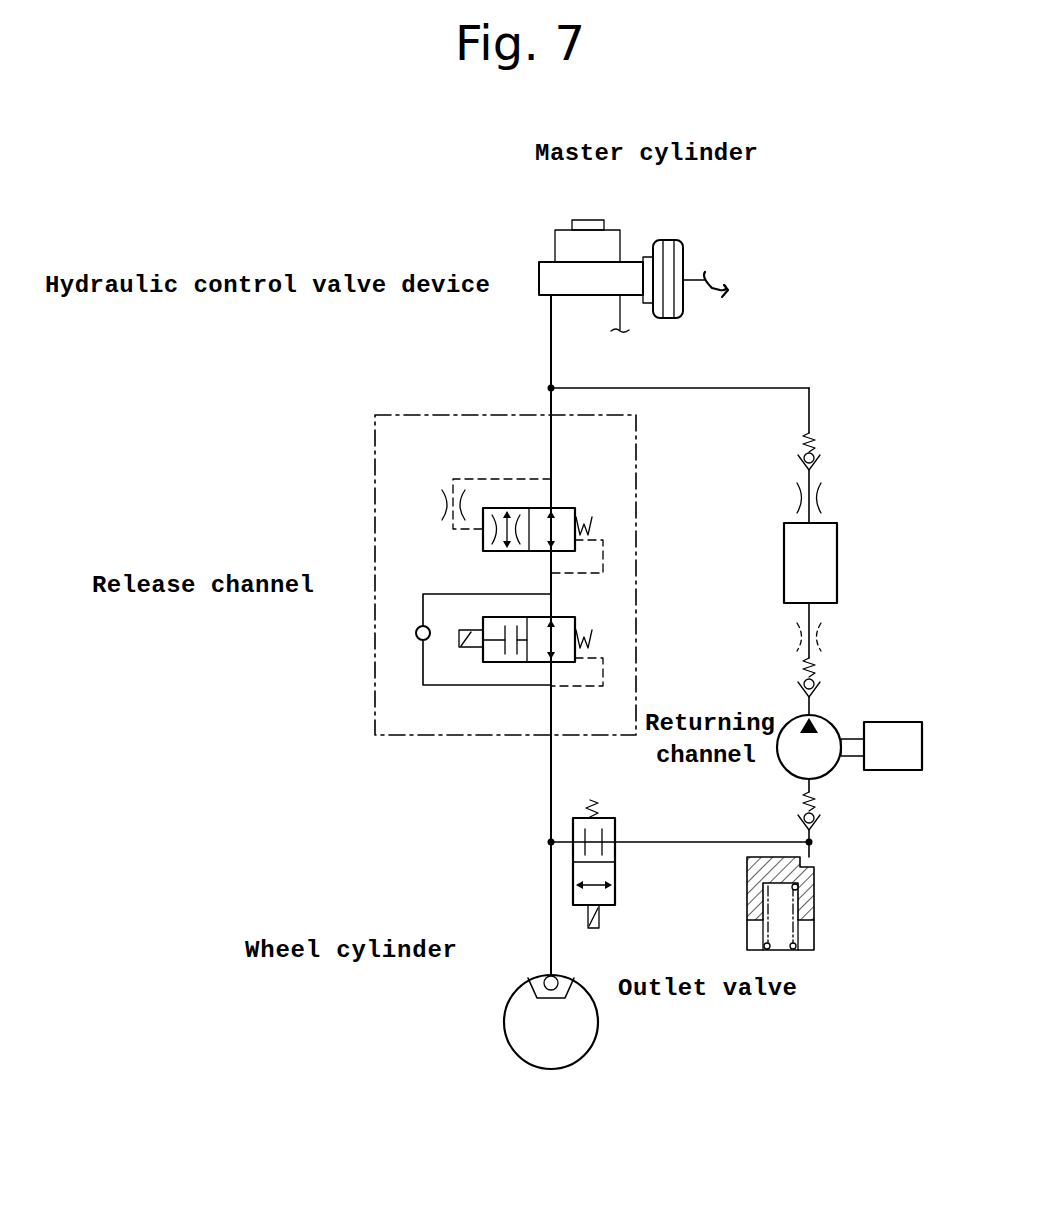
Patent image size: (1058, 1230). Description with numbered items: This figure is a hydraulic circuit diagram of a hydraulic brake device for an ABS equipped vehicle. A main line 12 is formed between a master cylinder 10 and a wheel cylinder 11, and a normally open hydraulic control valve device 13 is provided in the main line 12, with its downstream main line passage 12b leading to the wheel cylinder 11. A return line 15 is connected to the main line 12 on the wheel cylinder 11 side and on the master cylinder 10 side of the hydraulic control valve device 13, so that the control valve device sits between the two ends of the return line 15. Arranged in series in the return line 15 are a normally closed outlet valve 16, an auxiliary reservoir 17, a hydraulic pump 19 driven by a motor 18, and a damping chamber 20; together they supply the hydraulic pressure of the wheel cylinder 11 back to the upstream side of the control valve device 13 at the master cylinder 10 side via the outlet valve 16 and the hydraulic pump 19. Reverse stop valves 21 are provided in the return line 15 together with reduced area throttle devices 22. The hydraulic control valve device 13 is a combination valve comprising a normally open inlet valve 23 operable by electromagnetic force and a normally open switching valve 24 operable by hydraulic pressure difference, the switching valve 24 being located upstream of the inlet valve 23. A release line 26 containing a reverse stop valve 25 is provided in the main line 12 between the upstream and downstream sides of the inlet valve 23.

The master cylinder 10 is at (636, 262).
The wheel cylinder 11 is at (547, 978).
The main line 12 is at (551, 371).
The main line passage 12b is at (551, 778).
The hydraulic control valve device 13 is at (393, 410).
The return line 15 is at (686, 842).
The outlet valve 16 is at (612, 914).
The auxiliary reservoir 17 is at (815, 906).
The motor 18 is at (891, 722).
The hydraulic pump 19 is at (826, 720).
The damping chamber 20 is at (838, 558).
The reverse stop valve 21 is at (816, 462).
The reduced area throttle device 22 is at (797, 498).
The inlet valve 23 is at (575, 617).
The switching valve 24 is at (575, 508).
The reverse stop valve 25 is at (416, 638).
The release line 26 is at (423, 607).